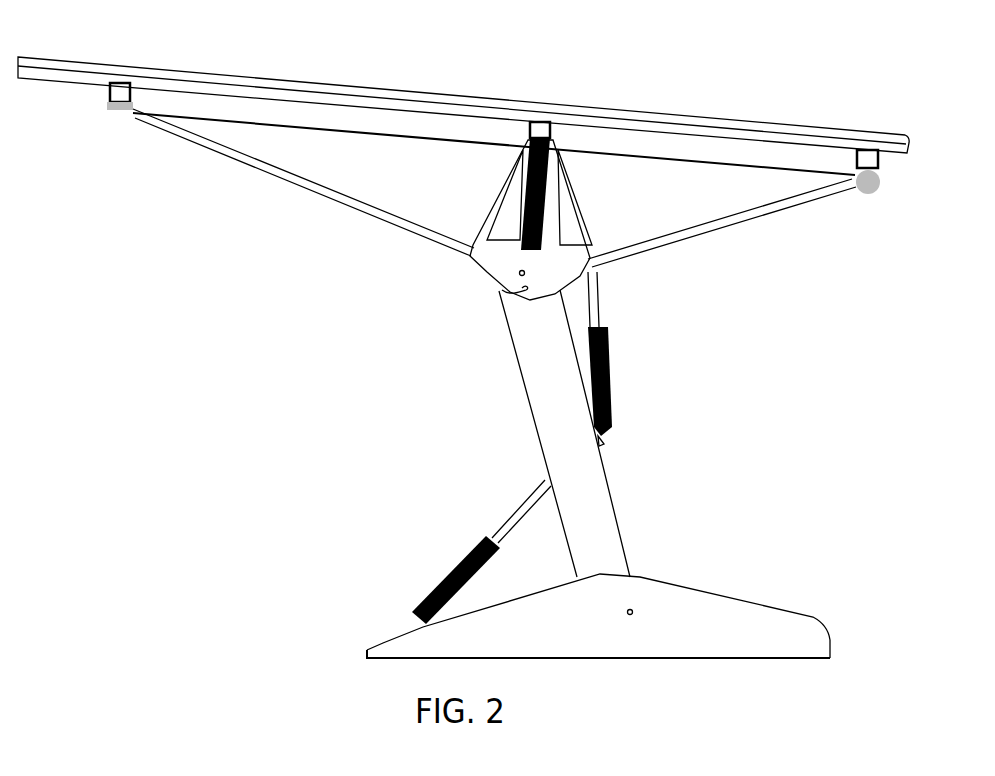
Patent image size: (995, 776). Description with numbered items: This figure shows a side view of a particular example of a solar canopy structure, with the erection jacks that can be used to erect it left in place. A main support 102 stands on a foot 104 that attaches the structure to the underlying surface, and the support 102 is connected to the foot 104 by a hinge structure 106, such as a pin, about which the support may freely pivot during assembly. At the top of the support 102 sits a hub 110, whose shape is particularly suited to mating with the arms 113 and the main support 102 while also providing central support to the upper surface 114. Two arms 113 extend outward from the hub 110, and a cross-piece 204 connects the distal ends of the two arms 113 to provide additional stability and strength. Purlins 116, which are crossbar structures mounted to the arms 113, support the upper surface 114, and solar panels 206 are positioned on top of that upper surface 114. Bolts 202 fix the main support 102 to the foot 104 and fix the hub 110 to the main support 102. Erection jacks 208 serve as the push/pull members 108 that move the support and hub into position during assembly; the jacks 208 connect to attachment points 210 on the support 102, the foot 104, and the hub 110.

The main support 102 is at (523, 388).
The foot 104 is at (544, 605).
The hinge structure 106 is at (610, 583).
The push/pull members 108 is at (502, 290).
The hub 110 is at (577, 220).
The arms 113 is at (727, 228).
The upper surface 114 is at (420, 114).
The purlins 116 is at (120, 109).
The bolts 202 is at (520, 272).
The cross-piece 204 is at (290, 134).
The solar panels 206 is at (713, 118).
The erection jacks 208 is at (606, 385).
The attachment points 210 is at (604, 448).